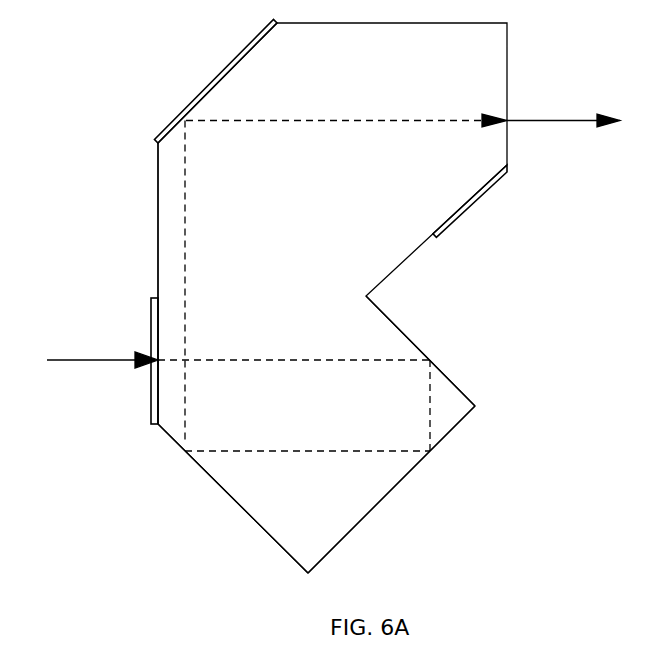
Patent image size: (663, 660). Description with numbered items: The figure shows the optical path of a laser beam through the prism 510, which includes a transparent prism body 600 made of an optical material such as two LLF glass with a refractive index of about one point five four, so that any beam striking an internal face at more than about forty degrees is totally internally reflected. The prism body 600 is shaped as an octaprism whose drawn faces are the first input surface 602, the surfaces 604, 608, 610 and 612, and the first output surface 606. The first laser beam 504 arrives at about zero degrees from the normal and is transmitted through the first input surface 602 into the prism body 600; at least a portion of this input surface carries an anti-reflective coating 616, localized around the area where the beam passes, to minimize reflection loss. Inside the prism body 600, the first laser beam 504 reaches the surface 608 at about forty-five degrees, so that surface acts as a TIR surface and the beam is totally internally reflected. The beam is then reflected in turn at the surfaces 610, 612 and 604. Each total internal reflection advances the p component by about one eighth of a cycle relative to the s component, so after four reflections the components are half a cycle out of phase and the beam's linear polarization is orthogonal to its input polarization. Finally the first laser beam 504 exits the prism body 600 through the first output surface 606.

The transparent prism body 600 is at (173, 188).
The first input surface 602 is at (157, 280).
The surface 604 is at (192, 108).
The first output surface 606 is at (508, 63).
The surface 608 is at (415, 340).
The surface 610 is at (428, 457).
The surface 612 is at (203, 470).
The anti-reflective coating 616 is at (150, 412).
The first laser beam 504 is at (53, 357).
The prism 510 is at (228, 520).